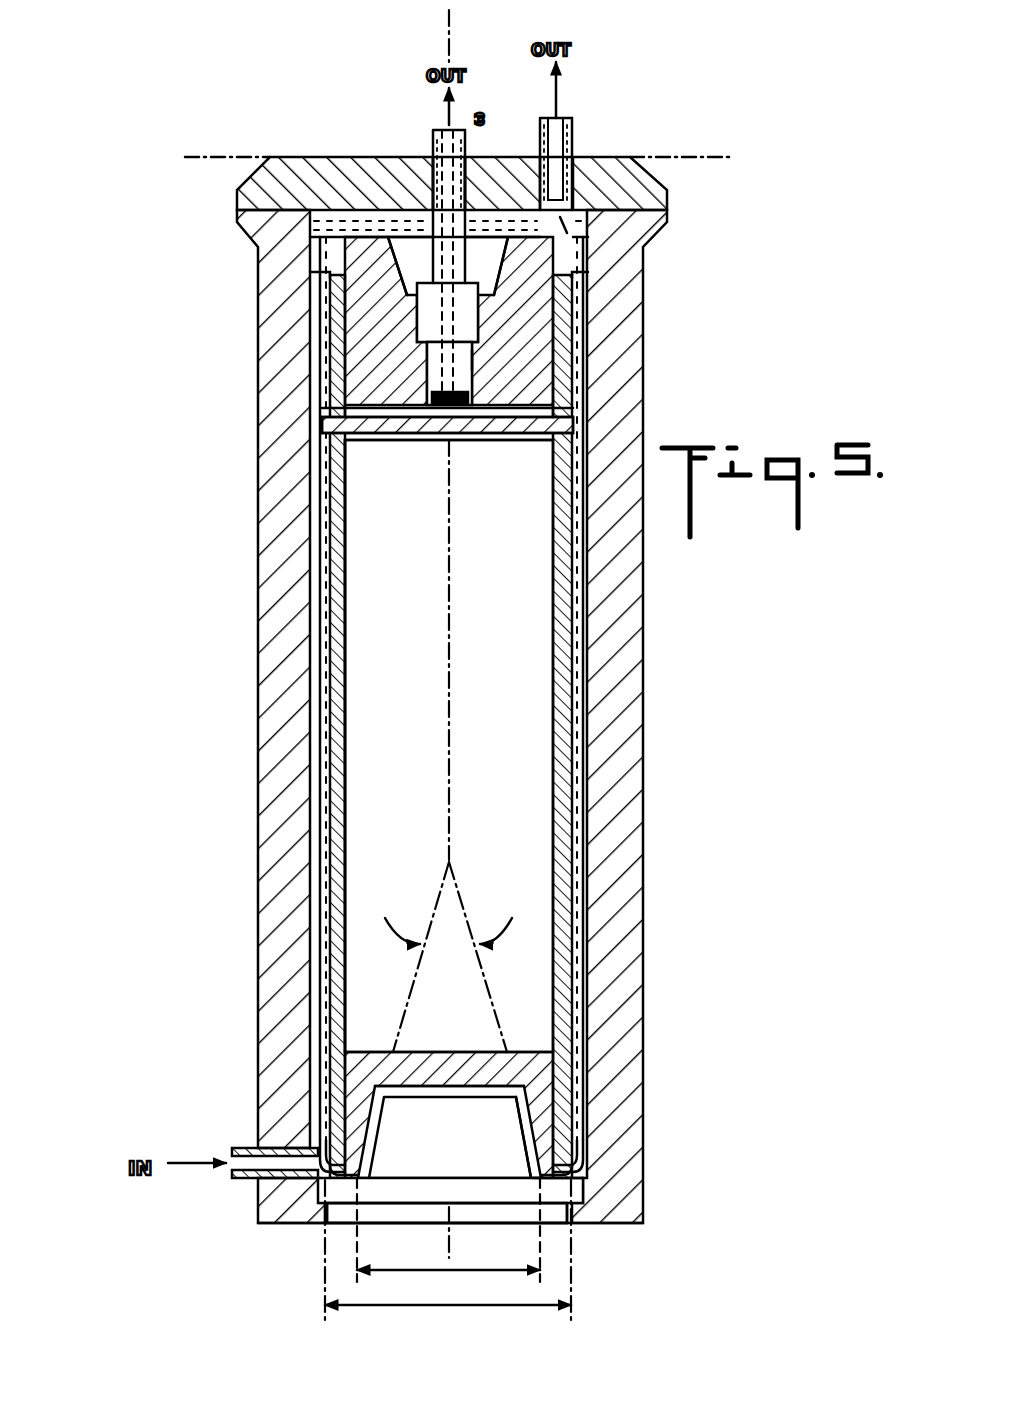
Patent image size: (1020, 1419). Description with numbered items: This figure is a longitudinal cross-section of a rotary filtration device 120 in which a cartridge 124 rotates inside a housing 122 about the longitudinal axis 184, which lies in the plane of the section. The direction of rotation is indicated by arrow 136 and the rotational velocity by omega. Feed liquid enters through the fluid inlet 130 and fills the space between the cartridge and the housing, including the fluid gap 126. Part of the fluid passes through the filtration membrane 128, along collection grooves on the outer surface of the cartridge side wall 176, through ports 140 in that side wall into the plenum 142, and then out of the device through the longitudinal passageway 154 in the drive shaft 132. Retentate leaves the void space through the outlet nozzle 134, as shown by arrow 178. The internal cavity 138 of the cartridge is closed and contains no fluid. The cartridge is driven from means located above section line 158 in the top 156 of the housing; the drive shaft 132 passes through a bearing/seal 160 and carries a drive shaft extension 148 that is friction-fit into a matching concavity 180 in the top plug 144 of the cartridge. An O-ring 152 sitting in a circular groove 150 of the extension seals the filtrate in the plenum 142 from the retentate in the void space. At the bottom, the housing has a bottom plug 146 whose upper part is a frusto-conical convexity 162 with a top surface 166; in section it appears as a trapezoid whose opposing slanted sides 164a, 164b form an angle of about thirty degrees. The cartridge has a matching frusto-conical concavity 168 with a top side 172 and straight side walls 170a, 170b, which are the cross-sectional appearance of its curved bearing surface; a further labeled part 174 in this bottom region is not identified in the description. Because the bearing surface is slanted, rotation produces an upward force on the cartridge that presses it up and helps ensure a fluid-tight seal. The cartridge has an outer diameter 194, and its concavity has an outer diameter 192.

The rotary filtration device 120 is at (185, 606).
The housing 122 is at (265, 752).
The cartridge 124 is at (312, 488).
The fluid gap 126 is at (326, 880).
The filtration membrane 128 is at (330, 533).
The fluid inlet 130 is at (240, 1180).
The drive shaft 132 is at (433, 133).
The outlet nozzle 134 is at (572, 135).
The arrow indicating direction of rotation 136 is at (420, 143).
The internal cavity 138 is at (462, 704).
The ports 140 is at (345, 420).
The plenum 142 is at (523, 410).
The top plug 144 is at (318, 240).
The bottom plug 146 is at (382, 1207).
The drive shaft extension 148 is at (425, 355).
The circular groove 150 is at (437, 398).
The O-ring 152 is at (470, 398).
The longitudinal passageway 154 is at (470, 282).
The top of the housing 156 is at (242, 187).
The section line 158 is at (238, 157).
The bearing/seal 160 is at (413, 175).
The convexity 162 is at (430, 1152).
The slanted side of trapezoid 164a is at (340, 1160).
The slanted side of trapezoid 164b is at (545, 1148).
The top surface 166 is at (494, 1100).
The frusto-conical concavity 168 is at (353, 1107).
The straight side wall 170a is at (345, 1150).
The straight side wall 170b is at (557, 1115).
The top side 172 is at (427, 1085).
The cavity top wall 174 is at (442, 1093).
The cartridge side wall 176 is at (330, 596).
The arrow 178 is at (580, 218).
The concavity 180 is at (472, 358).
The longitudinal axis 184 is at (450, 40).
The outer diameter of cartridge concavity 192 is at (418, 1272).
The outer diameter of cartridge 194 is at (430, 1314).